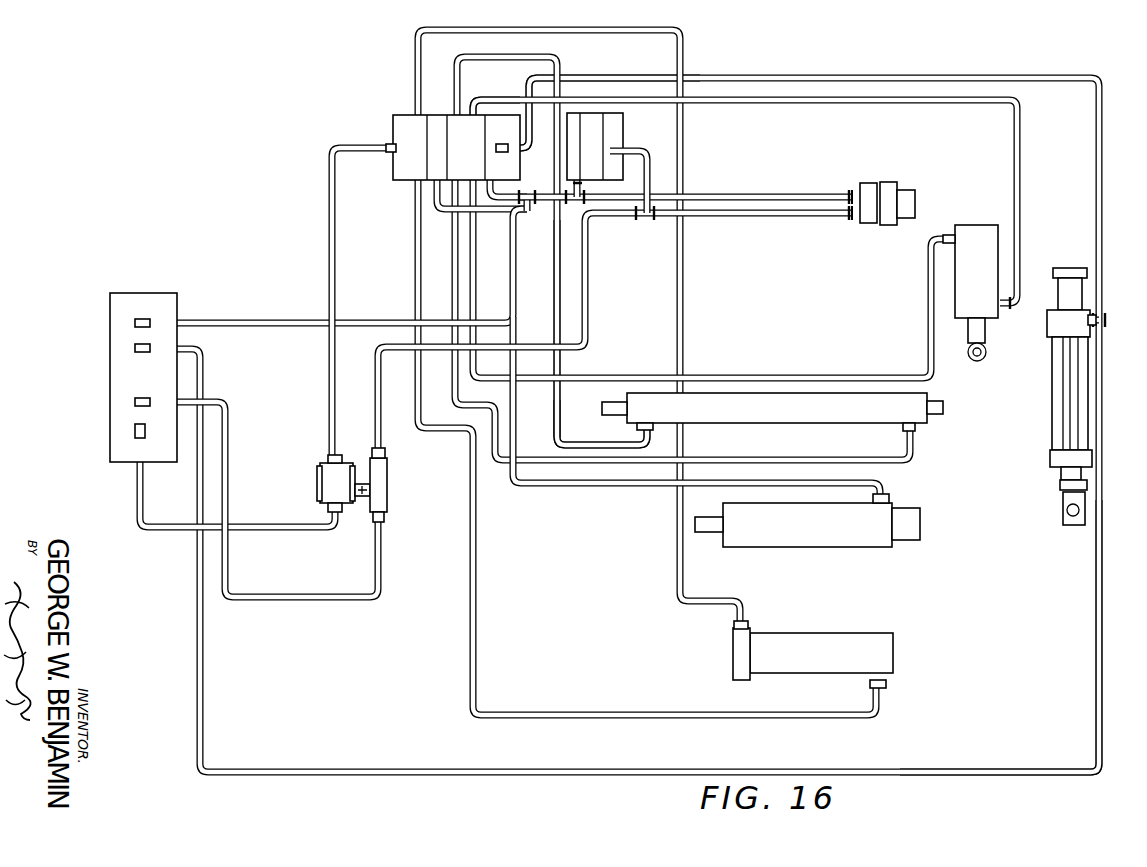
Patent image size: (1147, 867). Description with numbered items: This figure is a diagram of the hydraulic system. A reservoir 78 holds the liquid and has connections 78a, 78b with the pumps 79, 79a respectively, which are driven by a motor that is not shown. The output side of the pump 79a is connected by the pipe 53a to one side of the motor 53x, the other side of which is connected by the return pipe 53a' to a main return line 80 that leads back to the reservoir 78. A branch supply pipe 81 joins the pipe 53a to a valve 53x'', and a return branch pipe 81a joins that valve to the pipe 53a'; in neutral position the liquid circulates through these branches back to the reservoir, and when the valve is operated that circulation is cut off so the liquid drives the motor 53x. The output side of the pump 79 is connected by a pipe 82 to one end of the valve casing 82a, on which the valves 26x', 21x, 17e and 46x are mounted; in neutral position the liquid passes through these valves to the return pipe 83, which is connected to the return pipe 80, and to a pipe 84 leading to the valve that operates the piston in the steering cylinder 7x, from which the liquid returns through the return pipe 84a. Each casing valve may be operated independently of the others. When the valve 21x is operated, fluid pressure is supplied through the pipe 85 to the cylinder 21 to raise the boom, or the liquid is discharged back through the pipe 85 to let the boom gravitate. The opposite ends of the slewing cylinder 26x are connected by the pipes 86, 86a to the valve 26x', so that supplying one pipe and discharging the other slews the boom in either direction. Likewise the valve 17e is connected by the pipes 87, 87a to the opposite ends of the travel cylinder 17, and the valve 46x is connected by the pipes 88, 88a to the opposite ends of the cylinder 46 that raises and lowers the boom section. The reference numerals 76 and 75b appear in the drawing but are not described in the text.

The pipe 84 is at (1072, 78).
The return pipe 84a is at (1100, 608).
The valve 53x'' is at (602, 100).
The pipe 86 is at (703, 600).
The pipe 86a is at (648, 712).
The valve 21x is at (453, 120).
The pipe 87 is at (562, 305).
The pipe 87a is at (802, 457).
The pipe 88a is at (1021, 227).
The valve 17e is at (491, 92).
The pipe 88 is at (929, 301).
The pipe to boom travel cylinder 76 is at (560, 486).
The return pipe 83 is at (483, 214).
The main return line 80 is at (378, 322).
The pipe 85 is at (620, 488).
The pipe 82 is at (328, 241).
The valve casing 82a is at (393, 173).
The pipe 53a is at (596, 331).
The return pipe 53a' is at (686, 185).
The valve 46x is at (480, 158).
The return branch pipe 81a is at (582, 150).
The branch supply pipe 81 is at (649, 168).
The reservoir 78 is at (112, 331).
The connection 78a is at (242, 533).
The connection 78b is at (228, 437).
The pump 79 is at (329, 458).
The pump 79a is at (365, 506).
The valve 26x' is at (369, 136).
The valve unit port 75b is at (503, 139).
The motor 53x is at (880, 211).
The cylinder 46 is at (977, 226).
The cylinder 17 is at (866, 425).
The cylinder 21 is at (884, 548).
The cylinder 26x is at (815, 647).
The cylinder 7x is at (1056, 306).